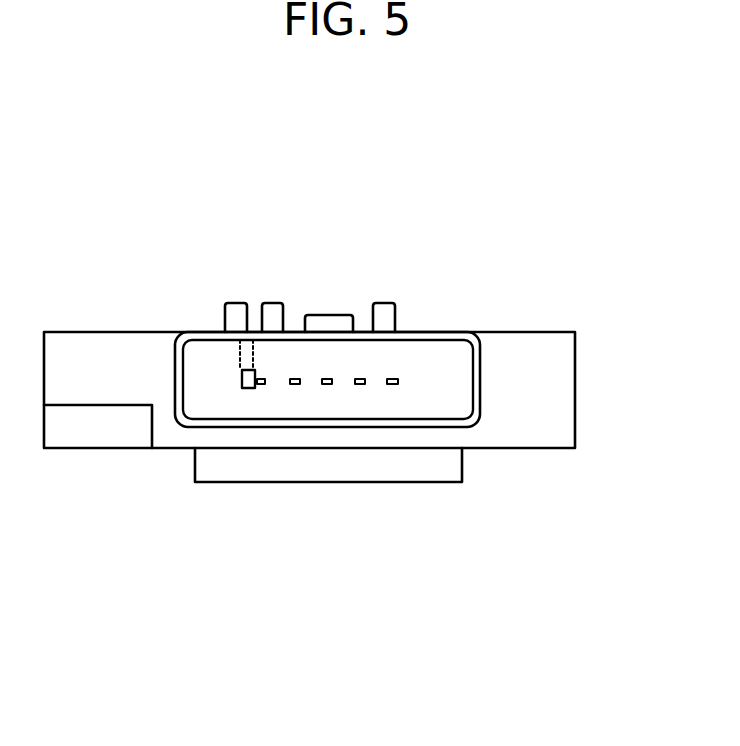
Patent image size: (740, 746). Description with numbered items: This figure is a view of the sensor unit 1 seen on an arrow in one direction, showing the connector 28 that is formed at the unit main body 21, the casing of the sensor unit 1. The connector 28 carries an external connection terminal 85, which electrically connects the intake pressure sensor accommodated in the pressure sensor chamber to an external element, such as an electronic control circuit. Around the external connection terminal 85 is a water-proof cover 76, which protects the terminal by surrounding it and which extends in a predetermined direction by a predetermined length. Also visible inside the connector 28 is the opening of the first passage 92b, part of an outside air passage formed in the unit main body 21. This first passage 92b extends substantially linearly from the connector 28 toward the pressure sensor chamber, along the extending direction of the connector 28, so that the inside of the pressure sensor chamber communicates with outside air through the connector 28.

The sensor unit 1 is at (439, 186).
The unit main body 21 is at (557, 402).
The connector 28 is at (482, 371).
The water-proof cover 76 is at (436, 332).
The external connection terminal 85 is at (327, 460).
The first passage 92b is at (243, 390).